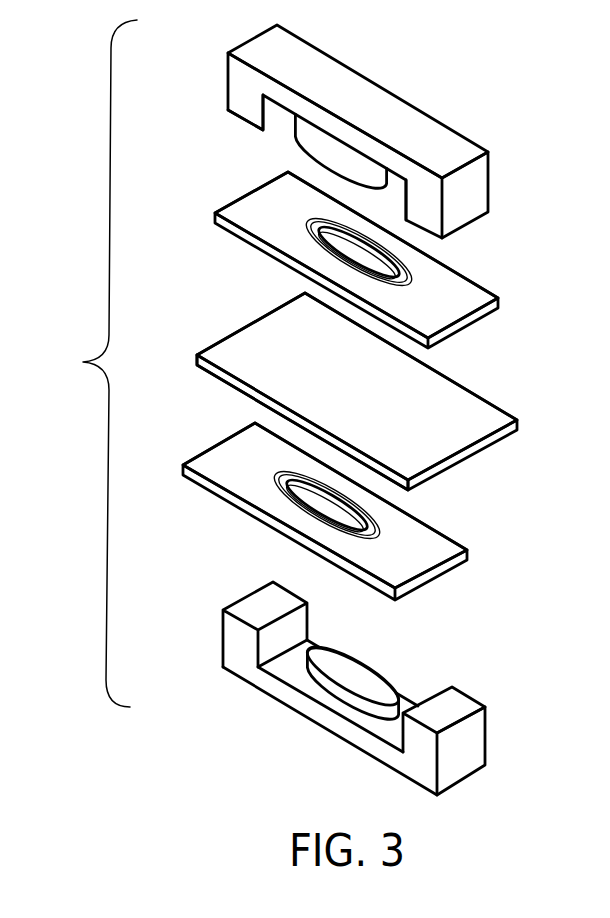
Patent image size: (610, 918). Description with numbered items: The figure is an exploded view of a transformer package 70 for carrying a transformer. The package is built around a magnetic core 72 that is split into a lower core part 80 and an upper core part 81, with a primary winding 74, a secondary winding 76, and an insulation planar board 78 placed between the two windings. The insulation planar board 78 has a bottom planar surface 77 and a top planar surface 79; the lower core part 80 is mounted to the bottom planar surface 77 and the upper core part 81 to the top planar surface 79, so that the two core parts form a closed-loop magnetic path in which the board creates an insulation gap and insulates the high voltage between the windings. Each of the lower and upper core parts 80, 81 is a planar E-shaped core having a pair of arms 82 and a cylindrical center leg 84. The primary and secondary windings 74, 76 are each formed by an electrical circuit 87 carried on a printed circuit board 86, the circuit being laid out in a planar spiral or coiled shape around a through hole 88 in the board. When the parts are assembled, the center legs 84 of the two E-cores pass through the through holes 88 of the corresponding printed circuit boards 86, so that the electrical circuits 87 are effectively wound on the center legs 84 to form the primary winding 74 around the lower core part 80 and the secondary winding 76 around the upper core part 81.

The transformer package 70 is at (92, 363).
The magnetic core 72 is at (482, 195).
The primary winding 74 is at (467, 514).
The secondary winding 76 is at (500, 263).
The bottom planar surface 77 is at (220, 380).
The insulation planar board 78 is at (517, 384).
The top planar surface 79 is at (233, 343).
The lower core part 80 is at (486, 644).
The upper core part 81 is at (489, 116).
The arms 82 is at (235, 103).
The center leg 84 is at (326, 133).
The printed circuit board 86 is at (253, 202).
The electrical circuit 87 is at (395, 278).
The through hole 88 is at (355, 247).